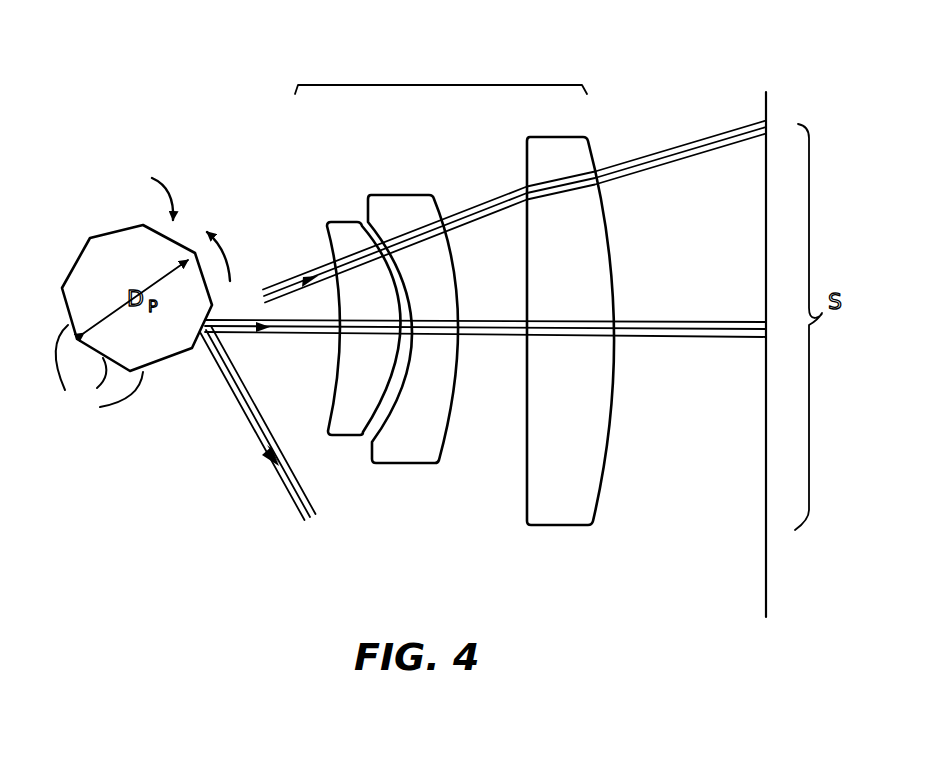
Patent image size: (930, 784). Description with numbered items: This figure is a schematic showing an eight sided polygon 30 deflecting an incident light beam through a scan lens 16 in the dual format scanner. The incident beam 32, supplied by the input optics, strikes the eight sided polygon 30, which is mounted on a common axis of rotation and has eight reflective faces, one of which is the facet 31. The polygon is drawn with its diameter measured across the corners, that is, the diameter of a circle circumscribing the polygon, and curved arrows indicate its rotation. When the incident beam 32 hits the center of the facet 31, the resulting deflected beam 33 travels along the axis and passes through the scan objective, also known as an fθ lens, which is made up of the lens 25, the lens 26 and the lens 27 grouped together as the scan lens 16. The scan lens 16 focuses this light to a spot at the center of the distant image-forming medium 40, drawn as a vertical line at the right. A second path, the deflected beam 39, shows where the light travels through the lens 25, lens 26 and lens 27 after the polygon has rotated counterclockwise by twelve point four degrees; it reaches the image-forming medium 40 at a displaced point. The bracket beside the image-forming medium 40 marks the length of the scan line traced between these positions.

The scan lens 16 is at (437, 85).
The lens 25 is at (341, 220).
The lens 26 is at (394, 195).
The lens 27 is at (542, 136).
The eight sided polygon 30 is at (140, 188).
The facet 31 is at (99, 371).
The incident beam 32 is at (300, 502).
The deflected beam 33 is at (303, 333).
The deflected beam 39 is at (301, 283).
The image-forming medium 40 is at (765, 110).